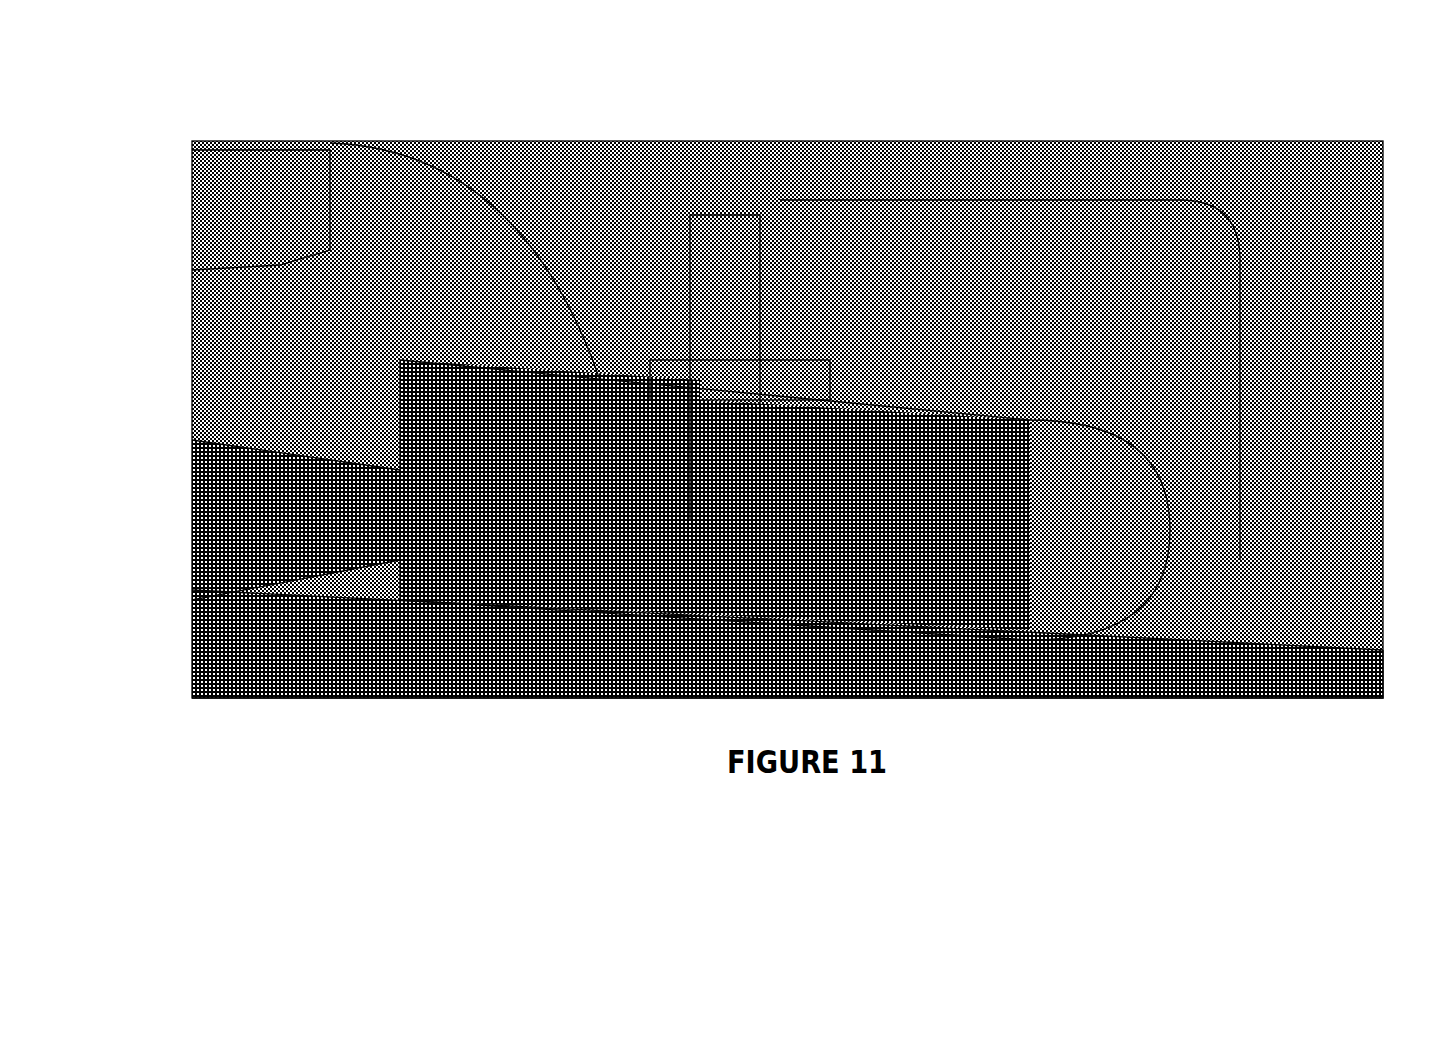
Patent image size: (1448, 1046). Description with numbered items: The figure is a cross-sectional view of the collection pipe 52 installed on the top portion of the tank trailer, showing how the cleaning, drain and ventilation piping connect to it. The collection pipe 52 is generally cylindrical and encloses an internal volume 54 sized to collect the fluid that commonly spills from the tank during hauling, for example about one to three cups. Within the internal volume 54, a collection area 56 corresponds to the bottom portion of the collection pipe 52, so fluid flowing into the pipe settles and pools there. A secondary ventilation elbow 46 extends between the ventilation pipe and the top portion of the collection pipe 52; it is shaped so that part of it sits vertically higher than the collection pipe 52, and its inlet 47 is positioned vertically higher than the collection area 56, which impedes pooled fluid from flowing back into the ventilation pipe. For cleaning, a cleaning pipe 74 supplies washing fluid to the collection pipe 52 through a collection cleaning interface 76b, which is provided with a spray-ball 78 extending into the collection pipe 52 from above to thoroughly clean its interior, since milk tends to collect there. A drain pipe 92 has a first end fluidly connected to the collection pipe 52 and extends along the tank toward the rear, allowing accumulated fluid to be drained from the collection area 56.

The secondary ventilation elbow 46 is at (192, 175).
The inlet 47 is at (433, 142).
The spray-ball 78 is at (655, 372).
The collection cleaning interface 76b is at (867, 142).
The internal volume 54 is at (1108, 142).
The collection pipe 52 is at (1220, 423).
The drain pipe 92 is at (192, 484).
The cleaning pipe 74 is at (192, 577).
The collection area 56 is at (1182, 697).